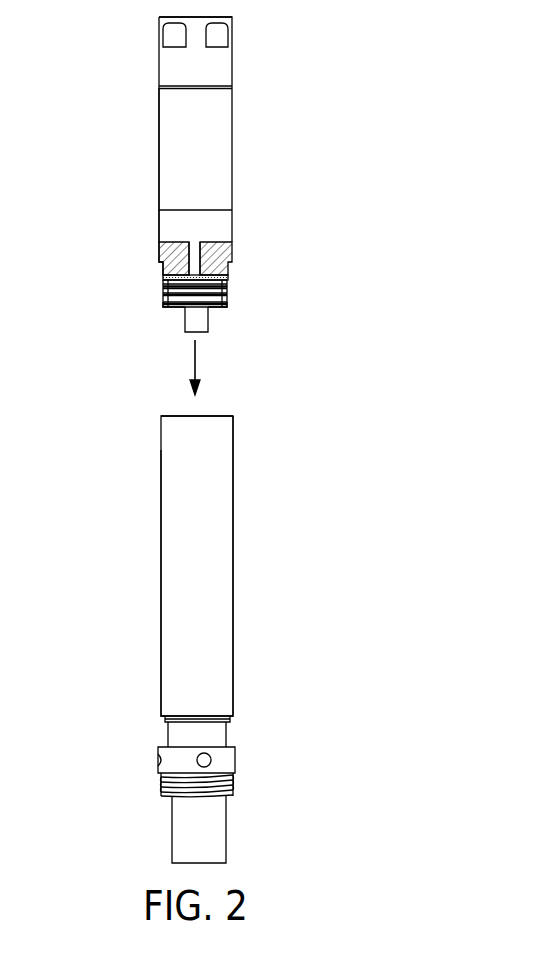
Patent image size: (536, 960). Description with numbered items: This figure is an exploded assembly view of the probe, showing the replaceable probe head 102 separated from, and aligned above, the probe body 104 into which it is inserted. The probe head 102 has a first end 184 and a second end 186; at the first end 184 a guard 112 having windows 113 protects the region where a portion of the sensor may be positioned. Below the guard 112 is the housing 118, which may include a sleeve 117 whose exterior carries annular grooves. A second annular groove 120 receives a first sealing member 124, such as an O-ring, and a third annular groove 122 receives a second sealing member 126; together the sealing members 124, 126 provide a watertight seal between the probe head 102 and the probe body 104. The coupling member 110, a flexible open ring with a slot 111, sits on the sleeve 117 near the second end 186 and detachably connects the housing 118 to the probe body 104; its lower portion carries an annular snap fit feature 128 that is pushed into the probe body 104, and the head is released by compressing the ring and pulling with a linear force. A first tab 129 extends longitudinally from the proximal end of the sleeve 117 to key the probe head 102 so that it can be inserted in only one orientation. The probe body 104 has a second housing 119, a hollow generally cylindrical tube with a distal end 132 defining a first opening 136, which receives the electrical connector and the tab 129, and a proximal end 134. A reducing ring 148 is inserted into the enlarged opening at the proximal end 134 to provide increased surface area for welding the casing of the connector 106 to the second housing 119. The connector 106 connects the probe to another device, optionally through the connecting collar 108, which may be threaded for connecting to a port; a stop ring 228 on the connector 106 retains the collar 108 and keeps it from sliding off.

The replaceable probe head 102 is at (248, 152).
The probe body 104 is at (265, 575).
The connector 106 is at (218, 837).
The connecting collar 108 is at (230, 760).
The coupling member 110 is at (228, 248).
The slot 111 is at (193, 250).
The guard 112 is at (228, 65).
The windows 113 is at (176, 30).
The sleeve 117 is at (227, 217).
The housing 118 is at (227, 105).
The second housing 119 is at (233, 488).
The second annular groove 120 is at (164, 288).
The third annular groove 122 is at (165, 302).
The first sealing member 124 is at (226, 293).
The second sealing member 126 is at (226, 304).
The snap fit feature 128 is at (225, 277).
The first tab 129 is at (202, 323).
The distal end 132 is at (234, 437).
The proximal end 134 is at (235, 705).
The first opening 136 is at (222, 416).
The reducing ring 148 is at (167, 722).
The first end 184 is at (159, 115).
The second end 186 is at (159, 255).
The stop ring 228 is at (230, 797).